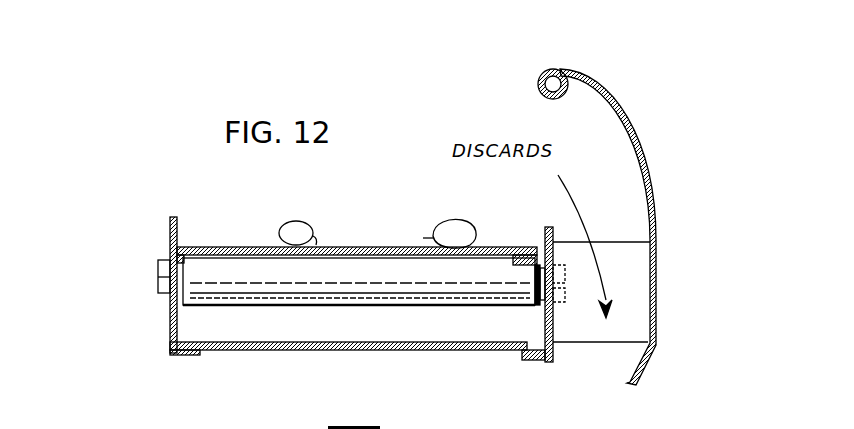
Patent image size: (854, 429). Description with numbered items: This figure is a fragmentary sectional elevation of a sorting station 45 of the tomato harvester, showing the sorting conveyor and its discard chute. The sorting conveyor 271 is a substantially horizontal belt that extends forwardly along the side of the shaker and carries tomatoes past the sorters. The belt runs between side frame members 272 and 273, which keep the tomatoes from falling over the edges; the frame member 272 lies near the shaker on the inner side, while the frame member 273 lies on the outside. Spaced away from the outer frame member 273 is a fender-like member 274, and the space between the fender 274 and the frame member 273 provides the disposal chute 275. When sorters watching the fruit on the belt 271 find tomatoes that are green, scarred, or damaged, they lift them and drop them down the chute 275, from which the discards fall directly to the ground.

The sorting station 45 is at (392, 111).
The sorting conveyor 271 is at (397, 250).
The side frame member 272 is at (170, 235).
The side frame member 273 is at (553, 330).
The fender-like member 274 is at (649, 190).
The disposal chute 275 is at (628, 342).